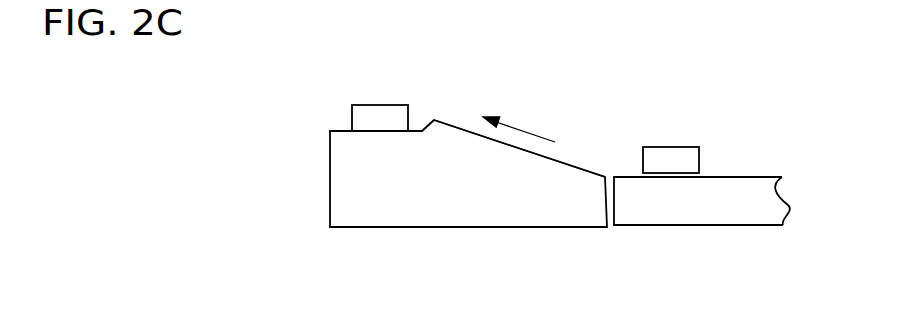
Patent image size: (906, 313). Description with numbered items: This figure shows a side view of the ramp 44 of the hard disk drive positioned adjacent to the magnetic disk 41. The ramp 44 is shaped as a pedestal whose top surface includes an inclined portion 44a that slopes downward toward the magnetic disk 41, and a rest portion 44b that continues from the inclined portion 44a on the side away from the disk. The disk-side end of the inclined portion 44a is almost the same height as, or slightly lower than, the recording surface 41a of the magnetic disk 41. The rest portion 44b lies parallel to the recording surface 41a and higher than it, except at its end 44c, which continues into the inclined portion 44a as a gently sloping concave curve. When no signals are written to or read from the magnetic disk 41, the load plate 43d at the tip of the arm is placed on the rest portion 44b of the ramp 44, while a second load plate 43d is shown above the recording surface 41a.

The ramp 44 is at (474, 212).
The inclined portion 44a is at (585, 168).
The rest portion 44b is at (337, 130).
The end of the rest portion 44c is at (430, 124).
The load plate 43d is at (374, 105).
The magnetic disk 41 is at (707, 212).
The recording surface 41a is at (742, 175).